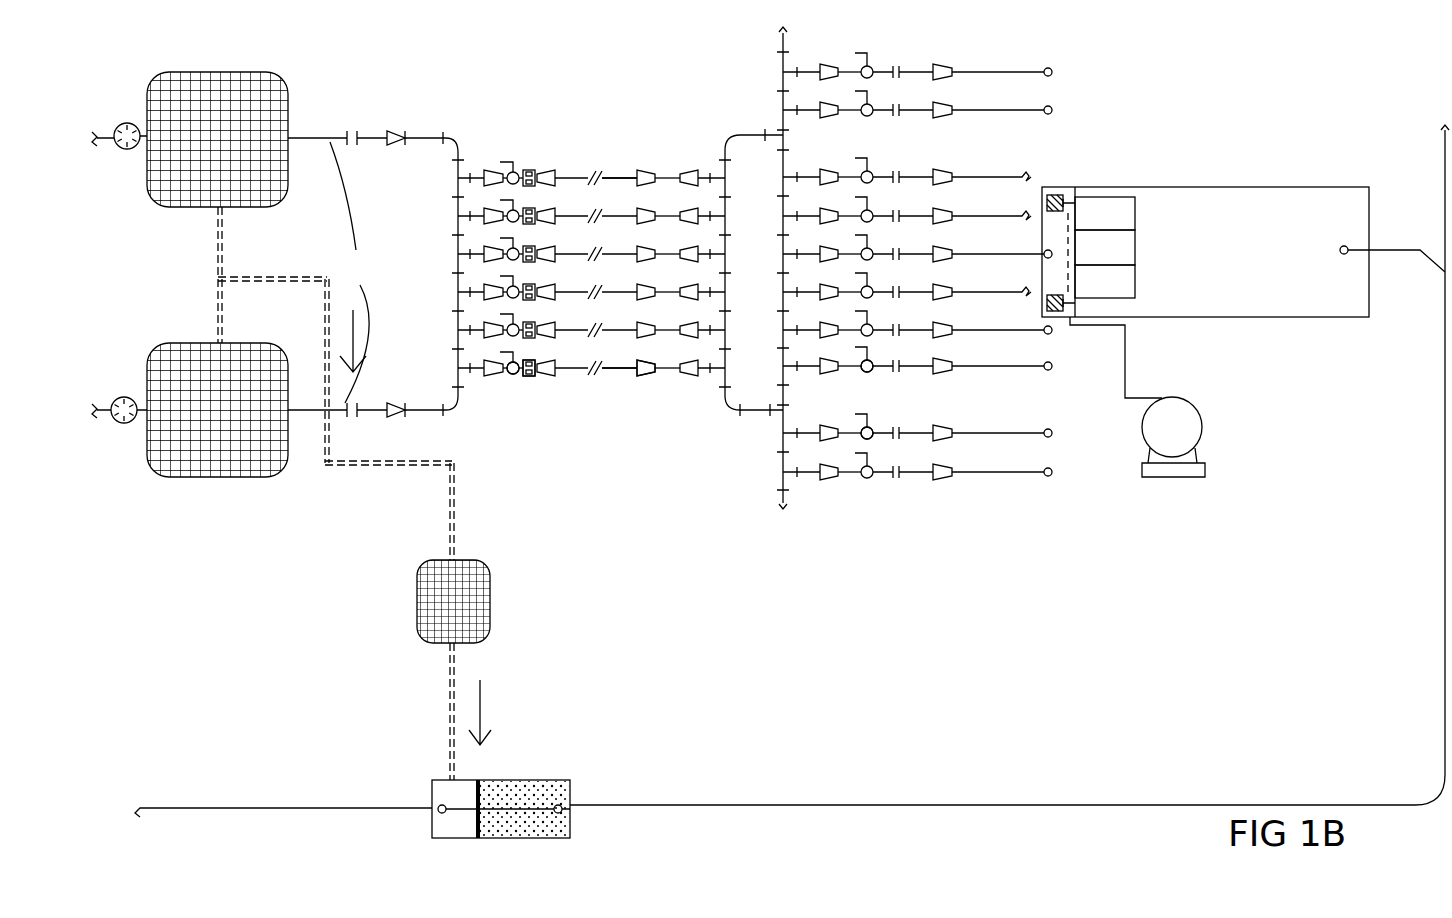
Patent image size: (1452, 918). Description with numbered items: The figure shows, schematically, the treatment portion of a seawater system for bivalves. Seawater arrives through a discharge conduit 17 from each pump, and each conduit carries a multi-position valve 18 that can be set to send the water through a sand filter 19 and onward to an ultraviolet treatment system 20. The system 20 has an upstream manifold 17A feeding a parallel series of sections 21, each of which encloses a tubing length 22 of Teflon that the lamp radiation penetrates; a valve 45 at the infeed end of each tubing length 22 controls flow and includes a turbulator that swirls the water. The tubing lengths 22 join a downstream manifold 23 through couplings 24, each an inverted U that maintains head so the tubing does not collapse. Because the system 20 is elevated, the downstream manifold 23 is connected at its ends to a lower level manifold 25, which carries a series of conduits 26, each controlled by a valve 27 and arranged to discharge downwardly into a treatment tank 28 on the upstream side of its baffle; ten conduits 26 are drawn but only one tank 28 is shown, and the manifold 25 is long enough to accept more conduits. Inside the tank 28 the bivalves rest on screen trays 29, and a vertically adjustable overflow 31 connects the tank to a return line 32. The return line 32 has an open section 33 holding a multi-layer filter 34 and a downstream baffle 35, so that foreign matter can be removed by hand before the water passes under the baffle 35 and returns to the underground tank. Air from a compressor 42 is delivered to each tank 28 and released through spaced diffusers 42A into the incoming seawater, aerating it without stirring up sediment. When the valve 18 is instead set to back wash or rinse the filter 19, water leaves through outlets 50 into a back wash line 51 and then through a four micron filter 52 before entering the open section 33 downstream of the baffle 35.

The discharge conduit 17 is at (106, 142).
The upstream manifold 17A is at (456, 200).
The multi-position valve 18 is at (130, 150).
The sand filter 19 is at (190, 342).
The ultraviolet treatment system 20 is at (492, 165).
The section 21 is at (607, 396).
The tubing length 22 is at (618, 178).
The downstream manifold 23 is at (728, 233).
The coupling 24 is at (668, 372).
The lower level manifold 25 is at (783, 455).
The conduit 26 is at (803, 437).
The valve 27 is at (888, 385).
The treatment tank 28 is at (1268, 186).
The screen tray 29 is at (1175, 222).
The vertically adjustable overflow 31 is at (1350, 248).
The return line 32 is at (320, 806).
The open section 33 is at (570, 790).
The multi-layer filter 34 is at (533, 780).
The downstream baffle 35 is at (478, 780).
The compressor 42 is at (1203, 438).
The diffuser 42A is at (1056, 315).
The valve 45 is at (515, 388).
The outlet 50 is at (245, 315).
The back wash line 51 is at (360, 468).
The micron filter 52 is at (492, 600).